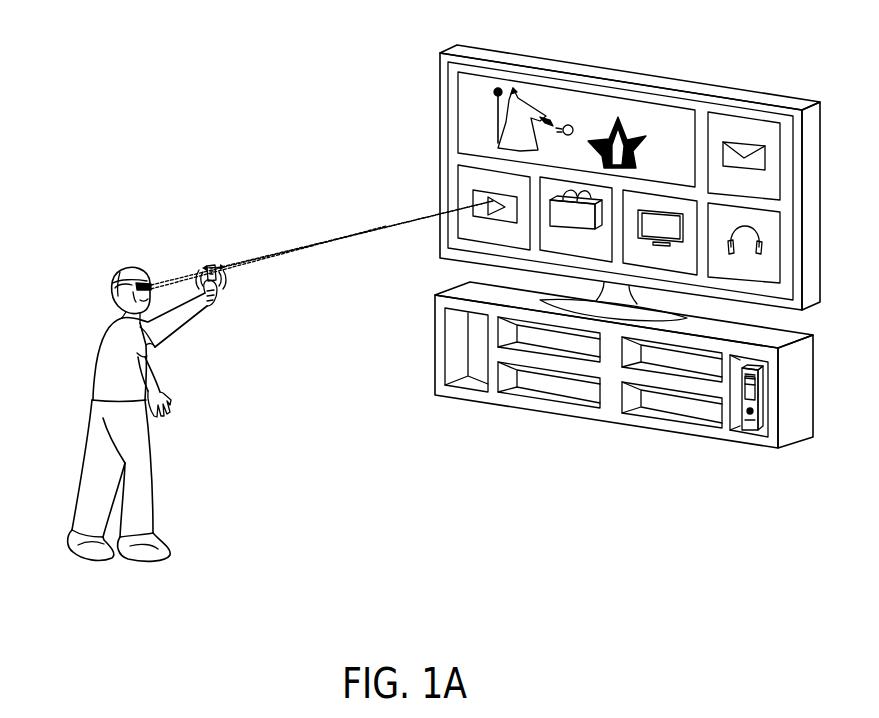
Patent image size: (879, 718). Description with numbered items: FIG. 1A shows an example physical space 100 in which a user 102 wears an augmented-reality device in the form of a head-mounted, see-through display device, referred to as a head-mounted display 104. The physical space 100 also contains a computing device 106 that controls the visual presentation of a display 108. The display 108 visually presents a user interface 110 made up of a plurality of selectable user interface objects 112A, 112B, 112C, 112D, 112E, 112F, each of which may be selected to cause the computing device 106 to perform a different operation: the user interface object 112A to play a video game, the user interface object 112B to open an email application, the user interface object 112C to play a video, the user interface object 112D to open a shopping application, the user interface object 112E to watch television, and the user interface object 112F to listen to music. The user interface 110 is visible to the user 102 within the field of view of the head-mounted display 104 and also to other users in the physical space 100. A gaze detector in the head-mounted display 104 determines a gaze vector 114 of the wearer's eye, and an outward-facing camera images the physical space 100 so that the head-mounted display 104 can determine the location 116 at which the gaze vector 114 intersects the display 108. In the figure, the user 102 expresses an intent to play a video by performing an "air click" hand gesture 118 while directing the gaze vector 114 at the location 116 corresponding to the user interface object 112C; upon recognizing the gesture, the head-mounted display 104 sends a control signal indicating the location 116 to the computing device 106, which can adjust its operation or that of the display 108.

The physical space 100 is at (130, 41).
The user 102 is at (100, 360).
The head-mounted display 104 is at (137, 277).
The computing device 106 is at (745, 433).
The display 108 is at (452, 48).
The user interface 110 is at (450, 128).
The user interface object 112A is at (552, 88).
The user interface object 112B is at (743, 118).
The user interface object 112C is at (473, 245).
The user interface object 112D is at (577, 258).
The user interface object 112E is at (648, 268).
The user interface object 112F is at (728, 282).
The gaze vector 114 is at (380, 232).
The location 116 is at (490, 205).
The hand gesture 118 is at (221, 246).